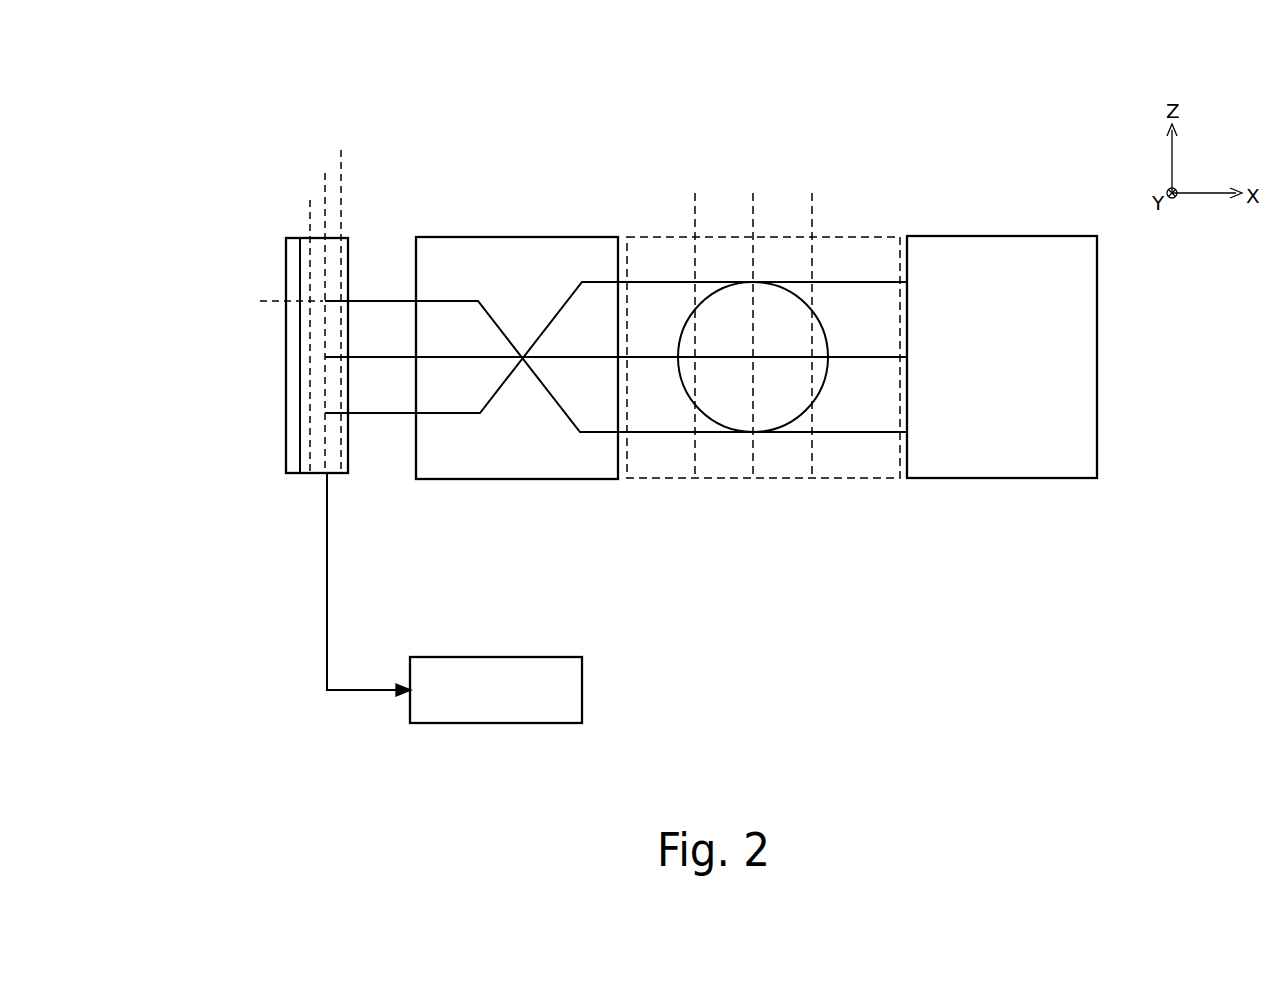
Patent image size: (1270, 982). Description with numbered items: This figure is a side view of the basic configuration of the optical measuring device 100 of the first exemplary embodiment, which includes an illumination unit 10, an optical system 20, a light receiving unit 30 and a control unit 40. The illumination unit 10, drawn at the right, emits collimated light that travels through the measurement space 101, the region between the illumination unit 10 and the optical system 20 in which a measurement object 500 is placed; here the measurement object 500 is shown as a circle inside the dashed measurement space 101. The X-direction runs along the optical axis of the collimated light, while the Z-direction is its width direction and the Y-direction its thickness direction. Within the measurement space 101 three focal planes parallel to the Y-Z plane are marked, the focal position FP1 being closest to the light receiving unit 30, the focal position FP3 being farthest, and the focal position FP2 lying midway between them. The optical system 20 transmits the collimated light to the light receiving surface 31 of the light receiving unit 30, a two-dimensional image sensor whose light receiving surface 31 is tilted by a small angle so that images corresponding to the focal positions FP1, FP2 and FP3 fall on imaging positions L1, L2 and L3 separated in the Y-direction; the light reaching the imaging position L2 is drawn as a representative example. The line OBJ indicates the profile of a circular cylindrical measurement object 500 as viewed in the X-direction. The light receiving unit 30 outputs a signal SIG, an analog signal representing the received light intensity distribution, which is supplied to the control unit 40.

The optical measuring device 100 is at (220, 118).
The illumination unit 10 is at (995, 236).
The optical system 20 is at (518, 237).
The light receiving unit 30 is at (286, 443).
The light receiving surface 31 is at (347, 468).
The control unit 40 is at (498, 657).
The measurement space 101 is at (878, 237).
The measurement object 500 is at (795, 423).
The imaging position L1 is at (310, 213).
The imaging position L2 is at (325, 173).
The imaging position L3 is at (341, 162).
The focal position FP1 is at (694, 320).
The focal position FP2 is at (753, 320).
The focal position FP3 is at (812, 320).
The line OBJ is at (270, 302).
The signal SIG is at (346, 584).